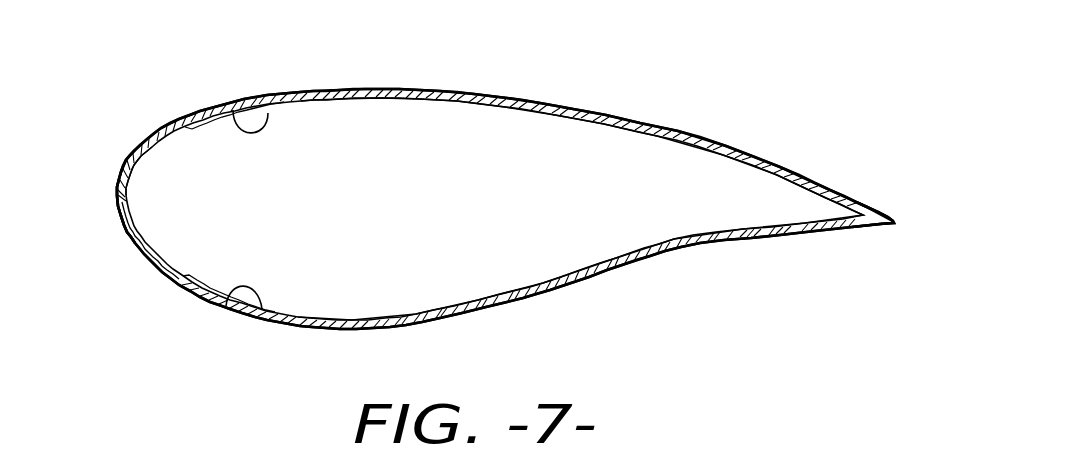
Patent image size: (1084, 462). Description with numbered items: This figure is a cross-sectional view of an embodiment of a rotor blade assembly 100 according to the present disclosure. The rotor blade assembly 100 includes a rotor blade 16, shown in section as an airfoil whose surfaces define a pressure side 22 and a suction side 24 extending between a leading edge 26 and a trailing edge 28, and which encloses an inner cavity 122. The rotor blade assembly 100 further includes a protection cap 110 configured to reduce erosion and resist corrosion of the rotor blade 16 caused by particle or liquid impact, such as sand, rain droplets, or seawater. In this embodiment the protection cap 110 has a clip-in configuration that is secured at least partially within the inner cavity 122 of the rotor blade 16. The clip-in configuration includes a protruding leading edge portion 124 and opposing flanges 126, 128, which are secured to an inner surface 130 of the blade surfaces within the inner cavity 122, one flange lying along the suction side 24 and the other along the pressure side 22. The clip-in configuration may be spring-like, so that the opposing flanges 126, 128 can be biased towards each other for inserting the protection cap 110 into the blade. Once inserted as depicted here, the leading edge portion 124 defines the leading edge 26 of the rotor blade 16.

The rotor blade assembly 100 is at (714, 93).
The rotor blade 16 is at (578, 103).
The pressure side 22 is at (415, 327).
The suction side 24 is at (412, 92).
The leading edge 26 is at (113, 198).
The trailing edge 28 is at (900, 220).
The protection cap 110 is at (111, 145).
The inner cavity 122 is at (440, 222).
The leading edge portion 124 is at (138, 257).
The flange 126 is at (213, 132).
The flange 128 is at (200, 283).
The inner surface 130 is at (273, 110).